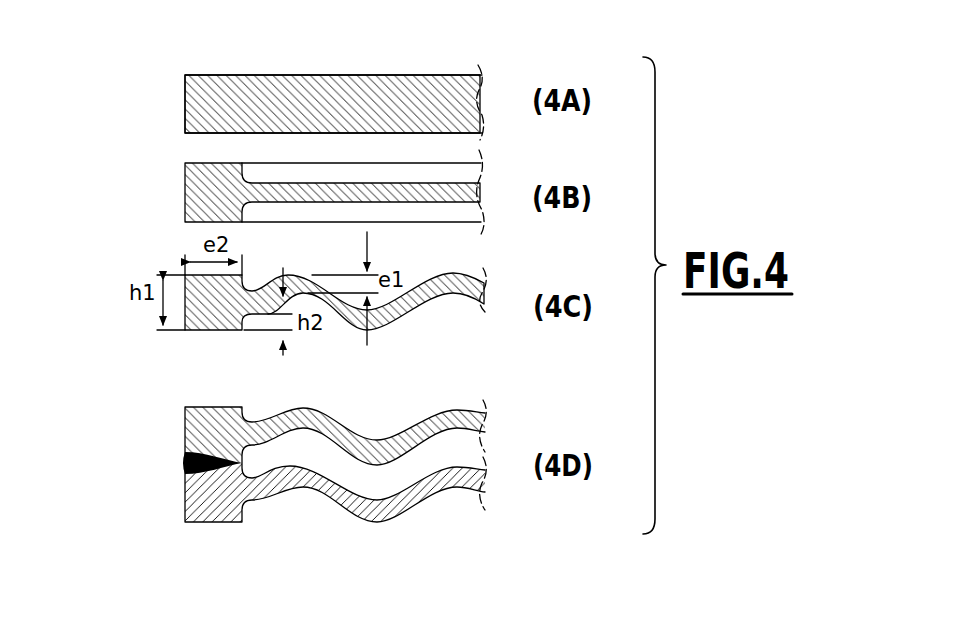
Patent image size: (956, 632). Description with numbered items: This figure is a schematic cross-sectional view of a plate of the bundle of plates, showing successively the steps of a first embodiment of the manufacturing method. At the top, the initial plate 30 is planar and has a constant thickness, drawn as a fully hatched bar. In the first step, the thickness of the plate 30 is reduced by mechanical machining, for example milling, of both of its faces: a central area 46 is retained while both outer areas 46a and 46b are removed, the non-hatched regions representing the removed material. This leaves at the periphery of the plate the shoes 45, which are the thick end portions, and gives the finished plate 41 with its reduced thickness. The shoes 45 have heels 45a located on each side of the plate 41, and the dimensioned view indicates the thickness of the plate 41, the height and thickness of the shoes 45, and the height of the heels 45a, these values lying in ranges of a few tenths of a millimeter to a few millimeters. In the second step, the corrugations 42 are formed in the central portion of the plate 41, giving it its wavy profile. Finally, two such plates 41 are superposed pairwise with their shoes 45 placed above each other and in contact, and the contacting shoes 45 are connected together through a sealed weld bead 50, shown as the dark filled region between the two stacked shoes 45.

The plate 30 is at (499, 83).
The shoes 45 is at (207, 100).
The heels 45a is at (217, 320).
The central area 46 is at (466, 191).
The outer area 46a is at (472, 172).
The outer area 46b is at (458, 212).
The plate 41 is at (495, 289).
The corrugations 42 is at (455, 273).
The sealed weld bead 50 is at (183, 463).